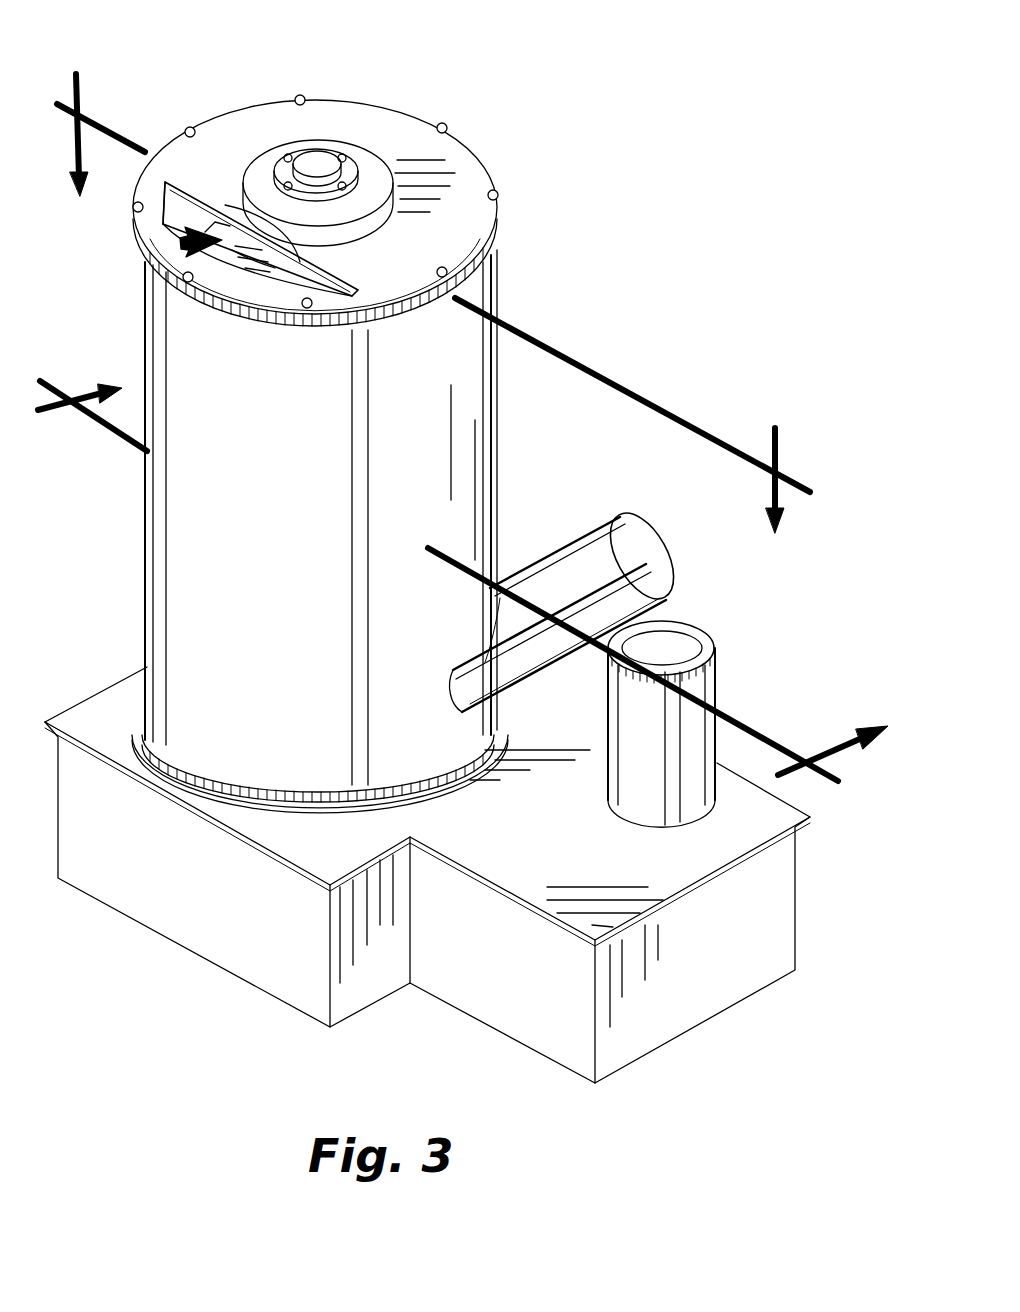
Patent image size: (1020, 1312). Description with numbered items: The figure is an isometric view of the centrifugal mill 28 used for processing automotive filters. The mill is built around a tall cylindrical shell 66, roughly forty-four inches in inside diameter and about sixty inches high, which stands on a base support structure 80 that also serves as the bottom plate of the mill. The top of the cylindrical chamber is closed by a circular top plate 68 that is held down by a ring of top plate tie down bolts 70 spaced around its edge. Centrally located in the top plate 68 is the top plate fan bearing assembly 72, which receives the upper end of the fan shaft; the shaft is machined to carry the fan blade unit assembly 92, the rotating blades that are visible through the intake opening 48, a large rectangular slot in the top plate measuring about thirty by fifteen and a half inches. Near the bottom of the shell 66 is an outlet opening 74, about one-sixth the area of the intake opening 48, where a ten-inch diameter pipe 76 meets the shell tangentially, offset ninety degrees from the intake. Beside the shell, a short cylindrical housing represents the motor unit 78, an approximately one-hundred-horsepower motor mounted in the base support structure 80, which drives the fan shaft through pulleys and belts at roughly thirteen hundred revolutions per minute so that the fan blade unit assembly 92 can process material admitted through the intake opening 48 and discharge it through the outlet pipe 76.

The centrifugal mill 28 is at (262, 1088).
The intake opening 48 is at (207, 233).
The cylindrical shell 66 is at (488, 295).
The circular top plate 68 is at (212, 222).
The top plate tie down bolts 70 is at (490, 197).
The top plate fan bearing assembly 72 is at (327, 168).
The outlet opening 74 is at (667, 558).
The pipe 76 is at (567, 562).
The motor unit 78 is at (717, 650).
The base support structure 80 is at (267, 832).
The fan blade unit assembly 92 is at (183, 247).